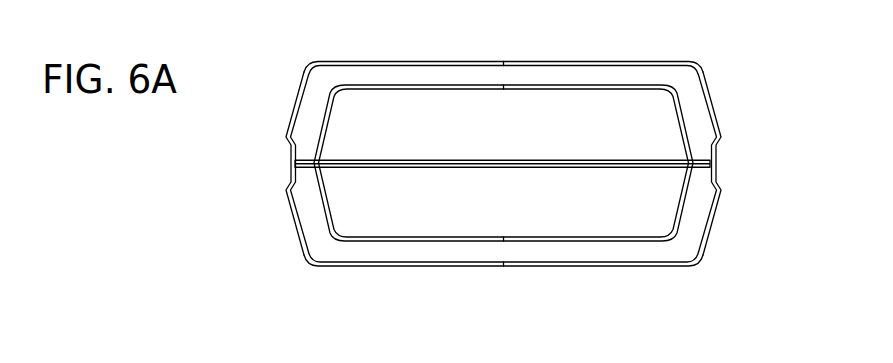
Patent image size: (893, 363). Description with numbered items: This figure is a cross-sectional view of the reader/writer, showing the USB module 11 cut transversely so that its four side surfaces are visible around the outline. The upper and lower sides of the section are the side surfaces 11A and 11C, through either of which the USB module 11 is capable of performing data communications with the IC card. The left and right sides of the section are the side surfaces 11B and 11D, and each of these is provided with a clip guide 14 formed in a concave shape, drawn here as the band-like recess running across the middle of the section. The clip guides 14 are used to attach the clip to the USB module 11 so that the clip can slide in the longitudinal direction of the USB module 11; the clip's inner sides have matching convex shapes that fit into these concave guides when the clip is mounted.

The USB module 11 is at (516, 61).
The side surface 11A is at (624, 61).
The side surface 11B is at (297, 90).
The side surface 11C is at (622, 267).
The side surface 11D is at (710, 97).
The clip guide 14 is at (292, 164).